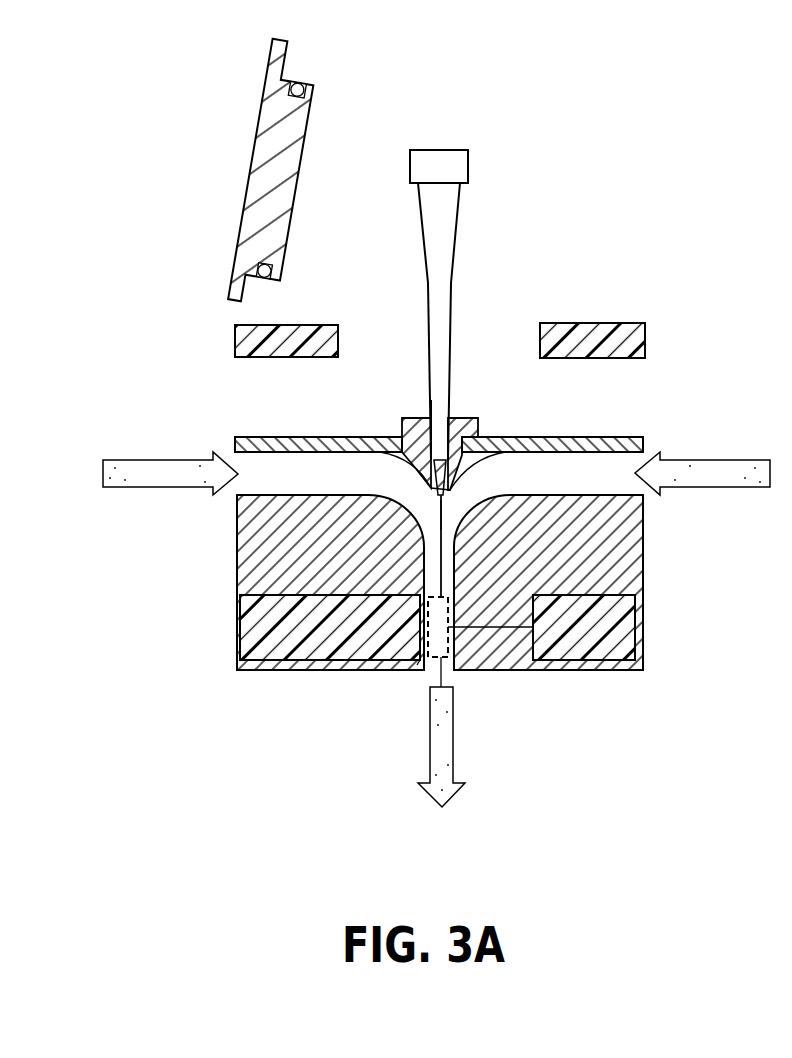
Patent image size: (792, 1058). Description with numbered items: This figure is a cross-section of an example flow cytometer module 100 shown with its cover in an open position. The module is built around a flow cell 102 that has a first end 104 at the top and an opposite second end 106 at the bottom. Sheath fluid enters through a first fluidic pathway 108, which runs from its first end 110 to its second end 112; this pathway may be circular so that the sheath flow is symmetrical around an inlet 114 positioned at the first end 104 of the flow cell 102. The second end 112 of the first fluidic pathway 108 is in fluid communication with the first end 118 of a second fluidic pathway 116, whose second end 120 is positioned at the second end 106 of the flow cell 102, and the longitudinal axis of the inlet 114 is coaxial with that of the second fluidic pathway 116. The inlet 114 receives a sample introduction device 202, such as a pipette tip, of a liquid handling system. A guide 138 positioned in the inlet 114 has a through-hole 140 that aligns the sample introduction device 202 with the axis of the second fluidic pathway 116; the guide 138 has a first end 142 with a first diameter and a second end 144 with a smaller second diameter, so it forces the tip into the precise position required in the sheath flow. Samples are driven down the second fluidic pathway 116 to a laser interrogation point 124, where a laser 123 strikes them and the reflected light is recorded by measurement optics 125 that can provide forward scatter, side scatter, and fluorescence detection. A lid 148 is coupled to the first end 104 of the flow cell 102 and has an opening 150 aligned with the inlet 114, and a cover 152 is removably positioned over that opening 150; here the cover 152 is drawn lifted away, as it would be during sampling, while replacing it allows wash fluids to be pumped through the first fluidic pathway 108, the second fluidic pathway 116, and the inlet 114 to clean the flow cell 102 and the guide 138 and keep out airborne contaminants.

The flow cytometer module 100 is at (185, 360).
The flow cell 102 is at (240, 540).
The first end 104 is at (327, 437).
The second end 106 is at (580, 672).
The first fluidic pathway 108 is at (296, 468).
The first end 110 is at (228, 451).
The second end 112 is at (447, 518).
The inlet 114 is at (416, 458).
The second fluidic pathway 116 is at (443, 577).
The first end 118 is at (443, 526).
The second end 120 is at (435, 665).
The laser 123 is at (637, 622).
The laser interrogation point 124 is at (417, 665).
The measurement optics 125 is at (240, 625).
The guide 138 is at (448, 498).
The through-hole 140 is at (442, 425).
The first end 142 is at (418, 418).
The second end 144 is at (430, 488).
The lid 148 is at (590, 323).
The opening 150 is at (372, 335).
The cover 152 is at (250, 178).
The sample introduction device 202 is at (430, 246).